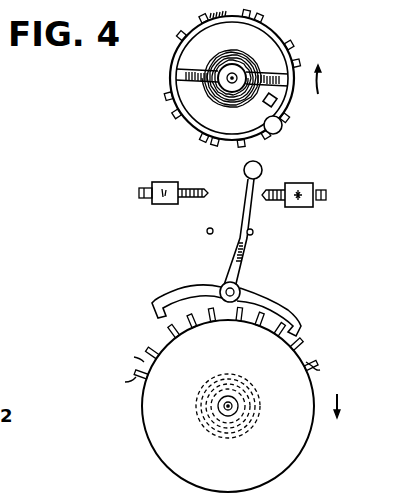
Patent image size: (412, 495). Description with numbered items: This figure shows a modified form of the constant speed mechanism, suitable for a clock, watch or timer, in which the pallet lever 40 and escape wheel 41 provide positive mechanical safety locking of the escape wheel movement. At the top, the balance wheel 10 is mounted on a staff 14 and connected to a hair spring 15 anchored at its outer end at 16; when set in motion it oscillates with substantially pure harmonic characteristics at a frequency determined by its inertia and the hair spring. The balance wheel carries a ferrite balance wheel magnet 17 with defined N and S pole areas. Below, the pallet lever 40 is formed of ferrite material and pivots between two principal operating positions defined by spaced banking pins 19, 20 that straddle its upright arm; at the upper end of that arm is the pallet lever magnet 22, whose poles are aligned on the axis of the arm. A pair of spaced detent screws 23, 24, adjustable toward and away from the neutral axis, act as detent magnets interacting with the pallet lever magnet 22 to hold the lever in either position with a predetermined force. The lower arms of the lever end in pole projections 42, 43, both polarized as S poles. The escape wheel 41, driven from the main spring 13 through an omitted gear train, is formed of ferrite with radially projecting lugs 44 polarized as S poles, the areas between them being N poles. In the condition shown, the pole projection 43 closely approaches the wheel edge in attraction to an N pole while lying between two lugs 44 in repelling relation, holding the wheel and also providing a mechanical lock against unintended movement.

The balance wheel 10 is at (183, 67).
The main spring 13 is at (205, 412).
The staff 14 is at (237, 75).
The hair spring 15 is at (240, 49).
The hair spring anchor 16 is at (266, 106).
The balance wheel magnet 17 is at (282, 130).
The banking pin 19 is at (207, 234).
The banking pin 20 is at (253, 234).
The pallet lever magnet 22 is at (262, 172).
The detent screw 23 is at (147, 190).
The detent screw 24 is at (312, 187).
The pallet lever 40 is at (240, 282).
The escape wheel 41 is at (298, 445).
The pole projection 42 is at (155, 314).
The pole projection 43 is at (300, 336).
The lugs 44 is at (308, 366).